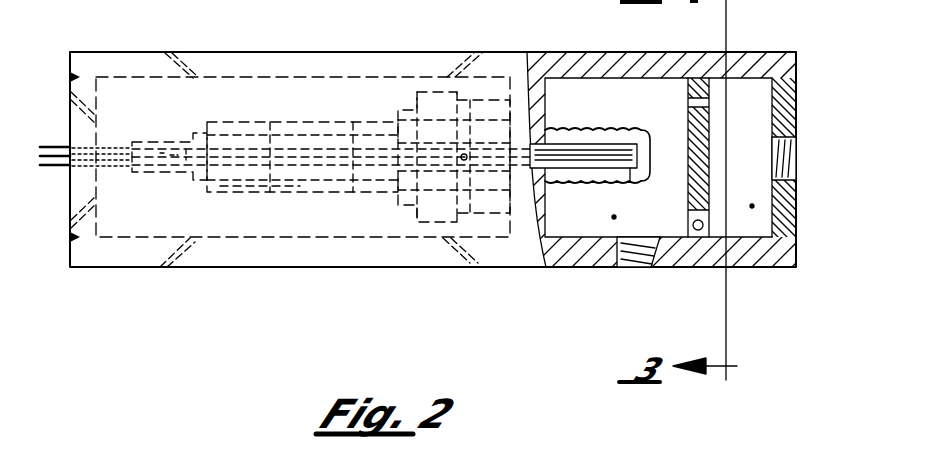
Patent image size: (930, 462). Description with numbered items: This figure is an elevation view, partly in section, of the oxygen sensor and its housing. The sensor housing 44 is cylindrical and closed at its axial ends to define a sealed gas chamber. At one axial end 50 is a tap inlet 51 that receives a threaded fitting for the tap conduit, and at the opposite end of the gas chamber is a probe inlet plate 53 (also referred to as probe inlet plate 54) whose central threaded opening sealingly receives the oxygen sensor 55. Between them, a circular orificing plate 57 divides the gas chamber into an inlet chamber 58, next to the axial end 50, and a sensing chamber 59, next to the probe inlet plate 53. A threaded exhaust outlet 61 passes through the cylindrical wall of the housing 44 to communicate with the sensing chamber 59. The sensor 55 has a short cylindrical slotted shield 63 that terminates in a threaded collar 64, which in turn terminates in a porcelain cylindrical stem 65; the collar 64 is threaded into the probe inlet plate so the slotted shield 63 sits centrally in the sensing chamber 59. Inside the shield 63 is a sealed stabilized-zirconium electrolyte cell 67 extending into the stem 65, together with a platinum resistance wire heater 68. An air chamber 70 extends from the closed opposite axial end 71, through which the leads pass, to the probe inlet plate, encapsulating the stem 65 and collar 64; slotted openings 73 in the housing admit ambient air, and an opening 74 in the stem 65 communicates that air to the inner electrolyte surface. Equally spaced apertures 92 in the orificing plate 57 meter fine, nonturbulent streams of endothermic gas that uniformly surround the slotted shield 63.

The sensor housing 44 is at (528, 58).
The axial end 50 is at (797, 91).
The tap inlet 51 is at (797, 150).
The probe inlet plate 53 is at (550, 92).
The probe inlet plate 54 is at (543, 181).
The oxygen sensor 55 is at (636, 114).
The orificing plate 57 is at (710, 134).
The inlet chamber 58 is at (752, 206).
The sensing chamber 59 is at (614, 218).
The exhaust outlet 61 is at (648, 260).
The slotted shield 63 is at (629, 186).
The threaded collar 64 is at (476, 78).
The stem 65 is at (287, 122).
The electrolyte cell 67 is at (578, 130).
The heater 68 is at (650, 138).
The air chamber 70 is at (318, 52).
The opposite axial end 71 is at (70, 88).
The slotted openings 73 is at (169, 50).
The opening 74 is at (241, 193).
The apertures 92 is at (698, 231).